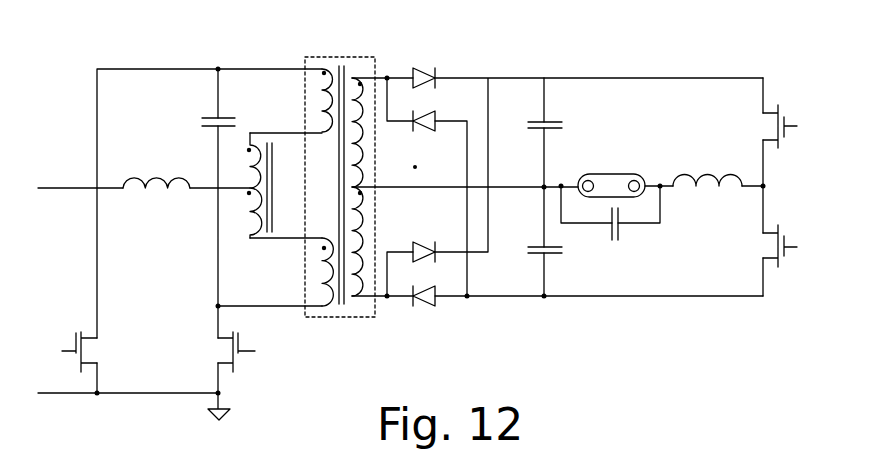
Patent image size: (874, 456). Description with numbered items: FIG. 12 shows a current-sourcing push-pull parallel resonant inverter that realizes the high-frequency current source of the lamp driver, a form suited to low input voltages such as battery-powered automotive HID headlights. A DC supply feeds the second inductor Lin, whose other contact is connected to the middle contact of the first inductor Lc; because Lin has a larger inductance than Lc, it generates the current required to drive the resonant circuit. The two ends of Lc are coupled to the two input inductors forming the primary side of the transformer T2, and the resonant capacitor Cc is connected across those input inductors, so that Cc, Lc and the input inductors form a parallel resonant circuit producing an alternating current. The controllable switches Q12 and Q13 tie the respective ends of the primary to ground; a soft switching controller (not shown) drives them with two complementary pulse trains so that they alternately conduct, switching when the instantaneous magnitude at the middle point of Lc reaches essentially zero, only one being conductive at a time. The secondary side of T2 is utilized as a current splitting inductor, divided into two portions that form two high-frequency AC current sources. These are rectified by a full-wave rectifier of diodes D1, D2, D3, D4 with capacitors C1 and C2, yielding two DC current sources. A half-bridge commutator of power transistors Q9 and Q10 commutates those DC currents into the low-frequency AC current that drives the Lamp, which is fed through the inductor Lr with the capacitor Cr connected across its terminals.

The resonant capacitor Cc is at (199, 137).
The second inductor Lin is at (156, 206).
The first inductor Lc is at (255, 203).
The transformer T2 is at (340, 169).
The rectifying diode D1 is at (406, 62).
The rectifying diode D2 is at (430, 141).
The rectifying diode D3 is at (431, 235).
The rectifying diode D4 is at (410, 312).
The capacitor C1 is at (529, 140).
The capacitor C2 is at (530, 266).
The lamp Lamp is at (607, 170).
The resonant capacitor Cr is at (597, 235).
The resonant inductor Lr is at (707, 165).
The power transistor Q9 is at (800, 123).
The power transistor Q10 is at (804, 243).
The controllable switch Q12 is at (59, 342).
The controllable switch Q13 is at (257, 342).